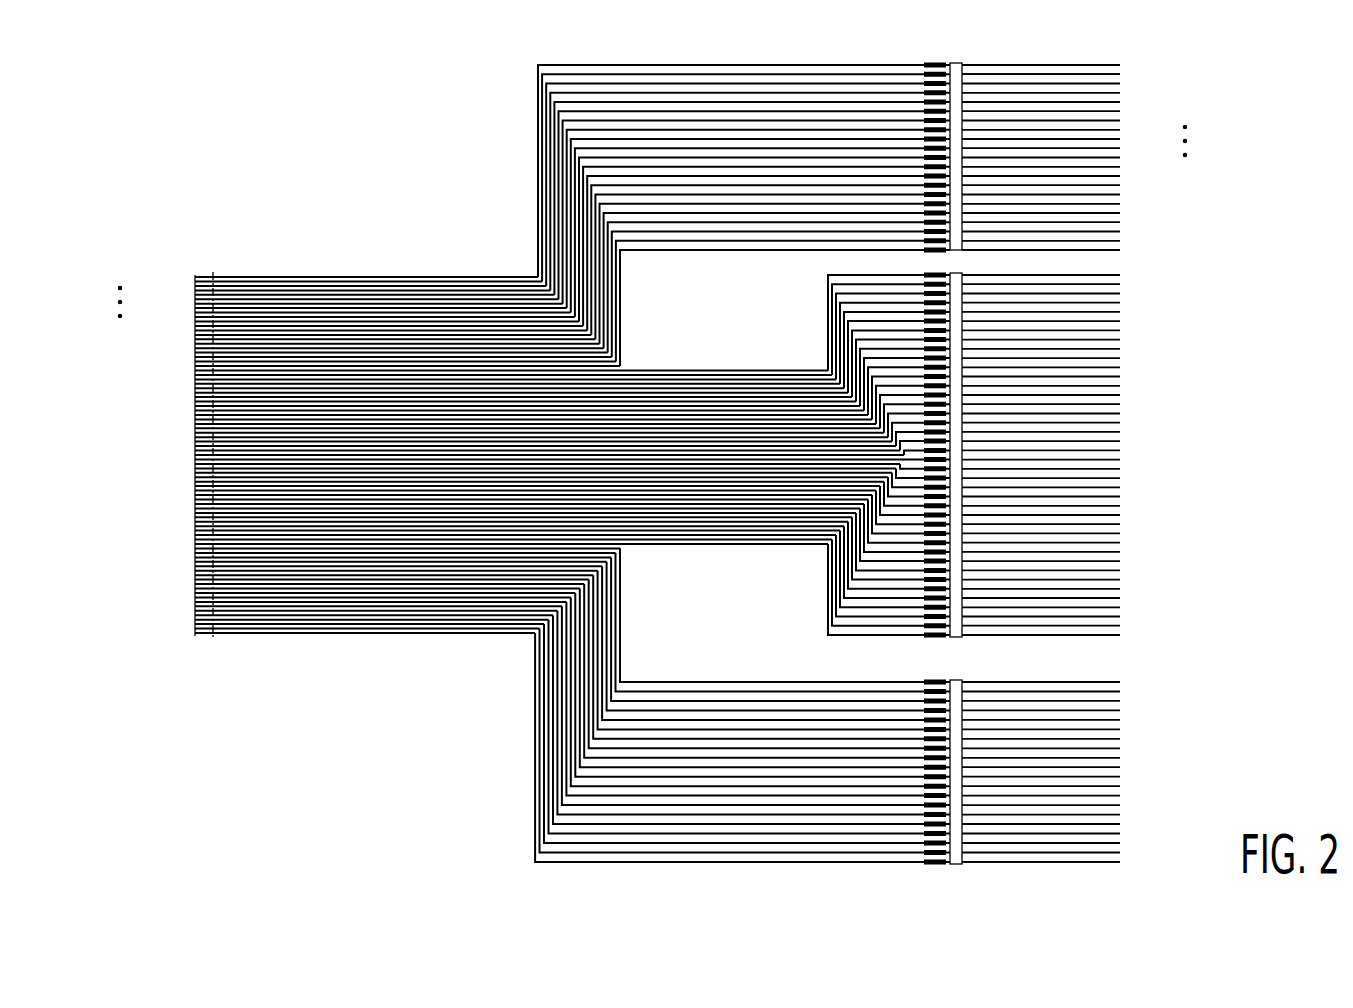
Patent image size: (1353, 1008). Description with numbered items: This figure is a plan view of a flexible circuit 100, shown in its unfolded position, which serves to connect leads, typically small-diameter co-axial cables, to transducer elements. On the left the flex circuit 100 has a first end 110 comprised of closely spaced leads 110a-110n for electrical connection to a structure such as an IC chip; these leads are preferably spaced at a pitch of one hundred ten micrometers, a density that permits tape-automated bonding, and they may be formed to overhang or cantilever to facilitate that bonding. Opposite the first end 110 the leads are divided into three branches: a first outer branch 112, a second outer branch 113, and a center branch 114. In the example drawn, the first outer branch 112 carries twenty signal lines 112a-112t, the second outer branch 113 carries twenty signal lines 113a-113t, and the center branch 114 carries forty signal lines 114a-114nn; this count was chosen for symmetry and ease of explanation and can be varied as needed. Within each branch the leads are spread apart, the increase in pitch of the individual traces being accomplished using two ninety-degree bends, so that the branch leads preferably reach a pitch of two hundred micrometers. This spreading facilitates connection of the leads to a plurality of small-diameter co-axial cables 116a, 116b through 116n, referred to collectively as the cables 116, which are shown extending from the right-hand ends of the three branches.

The flexible circuit 100 is at (250, 142).
The first end 110 is at (210, 272).
The lead 110a is at (195, 277).
The lead 110n is at (195, 633).
The first outer branch 112 is at (863, 62).
The signal line 112a is at (668, 65).
The signal line 112t is at (775, 250).
The second outer branch 113 is at (680, 645).
The signal line 113a is at (772, 682).
The signal line 113t is at (928, 862).
The center branch 114 is at (680, 345).
The signal line 114a is at (760, 370).
The signal line 114nn is at (714, 545).
The co-axial cables 116 is at (1062, 63).
The co-axial cable 116a is at (1120, 66).
The co-axial cable 116b is at (1120, 75).
The co-axial cable 116n is at (1120, 862).